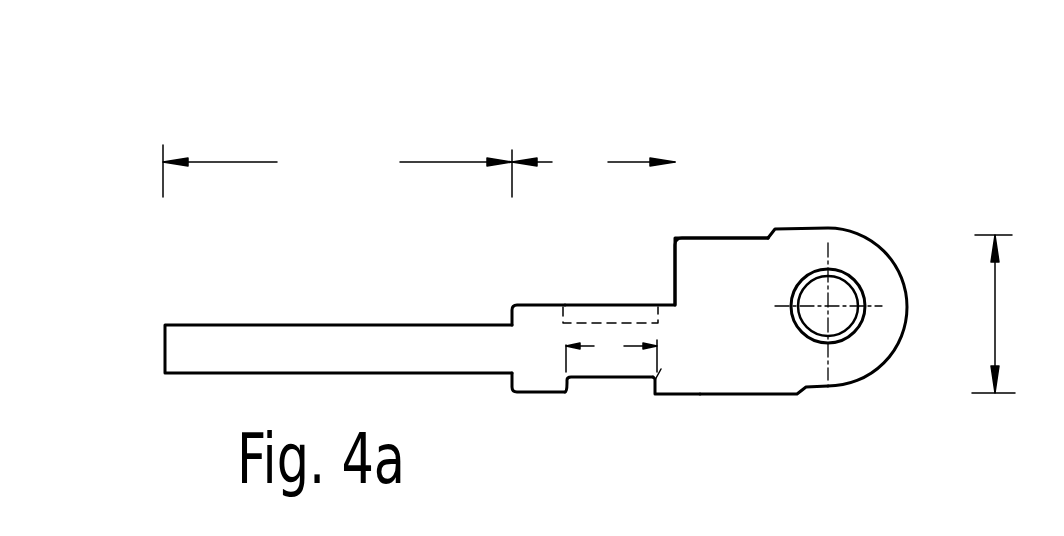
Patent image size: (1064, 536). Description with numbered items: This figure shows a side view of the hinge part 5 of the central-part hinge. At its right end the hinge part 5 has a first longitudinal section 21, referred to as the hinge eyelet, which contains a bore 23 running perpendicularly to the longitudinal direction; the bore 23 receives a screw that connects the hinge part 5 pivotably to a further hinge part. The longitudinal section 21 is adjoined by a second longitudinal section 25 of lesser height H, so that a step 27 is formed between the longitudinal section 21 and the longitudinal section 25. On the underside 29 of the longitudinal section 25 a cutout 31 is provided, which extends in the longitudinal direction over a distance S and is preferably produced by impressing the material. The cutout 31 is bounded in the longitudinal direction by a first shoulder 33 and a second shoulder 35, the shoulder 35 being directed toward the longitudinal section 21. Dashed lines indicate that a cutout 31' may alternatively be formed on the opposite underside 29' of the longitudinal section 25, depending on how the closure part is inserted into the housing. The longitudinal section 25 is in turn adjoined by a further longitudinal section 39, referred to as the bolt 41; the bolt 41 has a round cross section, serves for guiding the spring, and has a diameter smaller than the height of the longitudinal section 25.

The hinge part 5 is at (590, 285).
The first longitudinal section 21 is at (898, 162).
The bore 23 is at (843, 318).
The second longitudinal section 25 is at (593, 157).
The step 27 is at (678, 268).
The underside 29 is at (518, 446).
The underside 29' is at (513, 263).
The cutout 31 is at (662, 446).
The cutout 31' is at (665, 262).
The first shoulder 33 is at (570, 378).
The second shoulder 35 is at (660, 370).
The further longitudinal section 39 is at (337, 166).
The bolt 41 is at (187, 325).
The distance S is at (611, 351).
The height H is at (994, 314).